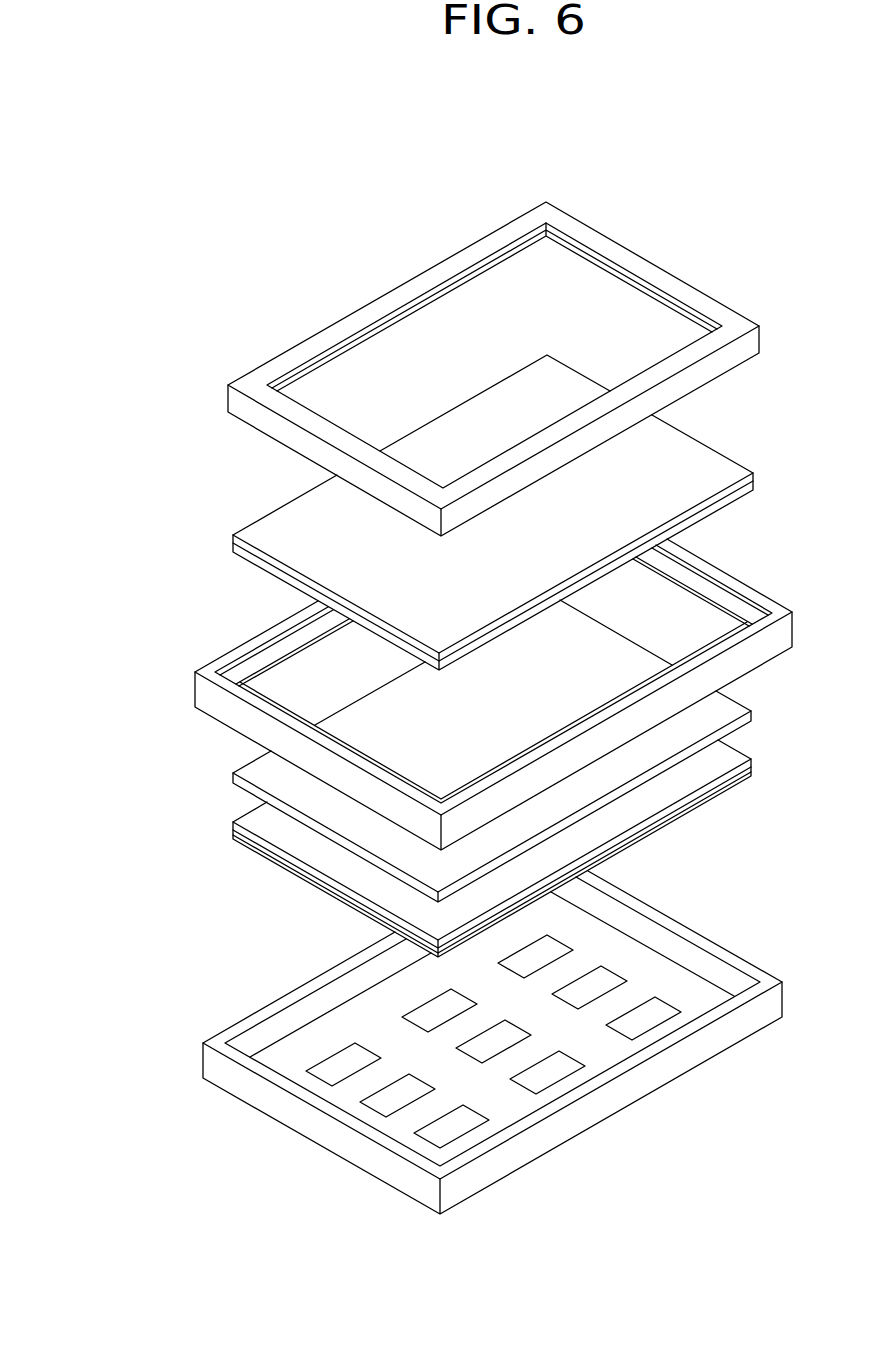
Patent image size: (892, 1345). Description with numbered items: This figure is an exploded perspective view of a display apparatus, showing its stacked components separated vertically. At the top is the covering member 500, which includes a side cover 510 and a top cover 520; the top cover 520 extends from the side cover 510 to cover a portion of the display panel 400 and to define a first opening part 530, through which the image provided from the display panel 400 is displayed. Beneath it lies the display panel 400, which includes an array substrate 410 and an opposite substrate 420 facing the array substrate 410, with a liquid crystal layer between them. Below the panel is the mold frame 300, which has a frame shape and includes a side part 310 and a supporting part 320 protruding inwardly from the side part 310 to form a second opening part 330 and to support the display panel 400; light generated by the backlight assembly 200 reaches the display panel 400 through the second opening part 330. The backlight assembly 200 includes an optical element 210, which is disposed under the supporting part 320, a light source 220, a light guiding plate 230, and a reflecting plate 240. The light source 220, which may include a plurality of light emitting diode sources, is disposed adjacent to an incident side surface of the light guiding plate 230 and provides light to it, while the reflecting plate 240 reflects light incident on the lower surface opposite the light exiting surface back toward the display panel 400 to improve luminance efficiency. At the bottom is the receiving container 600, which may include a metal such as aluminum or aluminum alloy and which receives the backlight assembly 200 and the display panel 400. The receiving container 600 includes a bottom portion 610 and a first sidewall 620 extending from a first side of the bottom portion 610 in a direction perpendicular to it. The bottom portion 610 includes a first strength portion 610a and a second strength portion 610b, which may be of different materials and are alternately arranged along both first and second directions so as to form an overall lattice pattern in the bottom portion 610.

The covering member 500 is at (132, 325).
The side cover 510 is at (235, 399).
The top cover 520 is at (250, 381).
The first opening part 530 is at (341, 374).
The display panel 400 is at (132, 525).
The array substrate 410 is at (233, 550).
The opposite substrate 420 is at (233, 536).
The mold frame 300 is at (108, 625).
The side part 310 is at (233, 652).
The supporting part 320 is at (230, 671).
The second opening part 330 is at (195, 702).
The backlight assembly 200 is at (132, 765).
The optical element 210 is at (233, 774).
The light source 220 is at (233, 823).
The light guiding plate 230 is at (257, 840).
The reflecting plate 240 is at (268, 858).
The receiving container 600 is at (101, 1125).
The bottom portion 610 is at (161, 1110).
The first strength portion 610a is at (310, 1075).
The second strength portion 610b is at (375, 1098).
The first sidewall 620 is at (382, 1165).